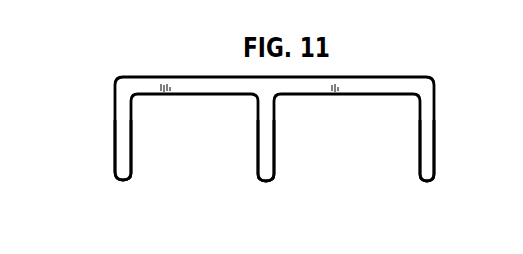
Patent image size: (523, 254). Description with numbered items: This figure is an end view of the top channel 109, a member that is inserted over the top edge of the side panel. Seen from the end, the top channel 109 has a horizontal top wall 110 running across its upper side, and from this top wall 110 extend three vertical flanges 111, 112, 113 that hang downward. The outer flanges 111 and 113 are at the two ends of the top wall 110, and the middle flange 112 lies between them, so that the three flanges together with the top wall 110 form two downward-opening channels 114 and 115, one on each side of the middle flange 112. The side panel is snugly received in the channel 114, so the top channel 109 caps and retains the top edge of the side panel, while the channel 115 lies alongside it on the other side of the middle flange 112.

The top channel 109 is at (382, 78).
The horizontal top wall 110 is at (168, 78).
The vertical flange 111 is at (113, 153).
The vertical flange 112 is at (262, 163).
The vertical flange 113 is at (434, 157).
The channel 114 is at (170, 147).
The channel 115 is at (360, 143).